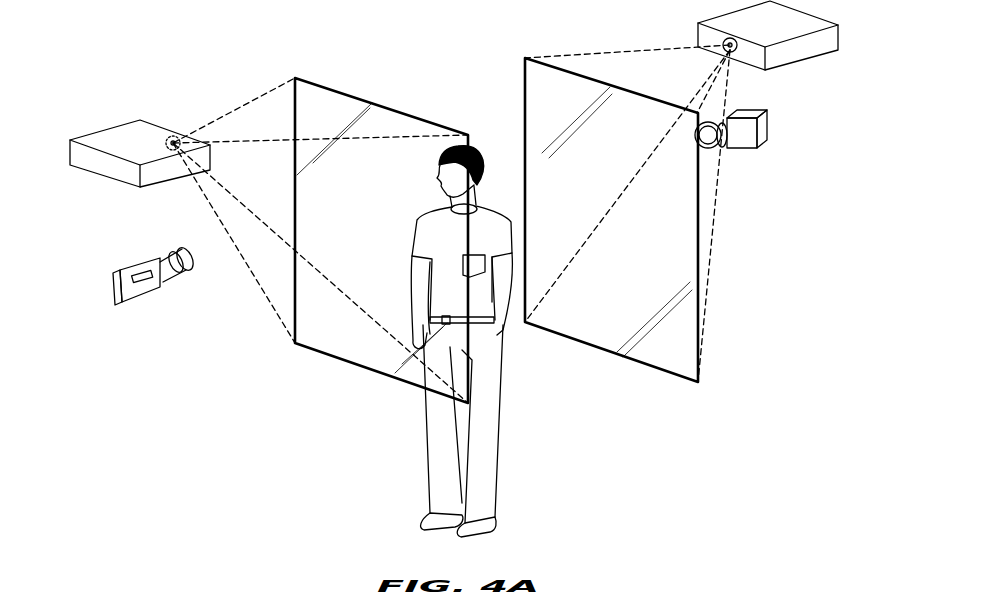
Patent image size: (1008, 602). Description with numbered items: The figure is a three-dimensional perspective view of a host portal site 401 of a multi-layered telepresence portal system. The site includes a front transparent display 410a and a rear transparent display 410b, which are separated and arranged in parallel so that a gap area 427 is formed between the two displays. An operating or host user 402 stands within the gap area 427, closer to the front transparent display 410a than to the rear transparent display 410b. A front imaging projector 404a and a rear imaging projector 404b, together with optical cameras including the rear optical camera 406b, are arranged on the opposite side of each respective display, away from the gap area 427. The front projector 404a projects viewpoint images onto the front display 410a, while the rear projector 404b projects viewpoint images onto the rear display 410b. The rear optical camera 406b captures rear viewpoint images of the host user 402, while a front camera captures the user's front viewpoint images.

The projection system configuration 401 is at (208, 66).
The gap area 427 is at (443, 79).
The host user 402 is at (497, 437).
The front imaging projector 404a is at (96, 173).
The rear imaging projector 404b is at (839, 44).
The rear optical camera 406b is at (113, 308).
The front transparent display 410a is at (342, 360).
The rear transparent display 410b is at (650, 366).